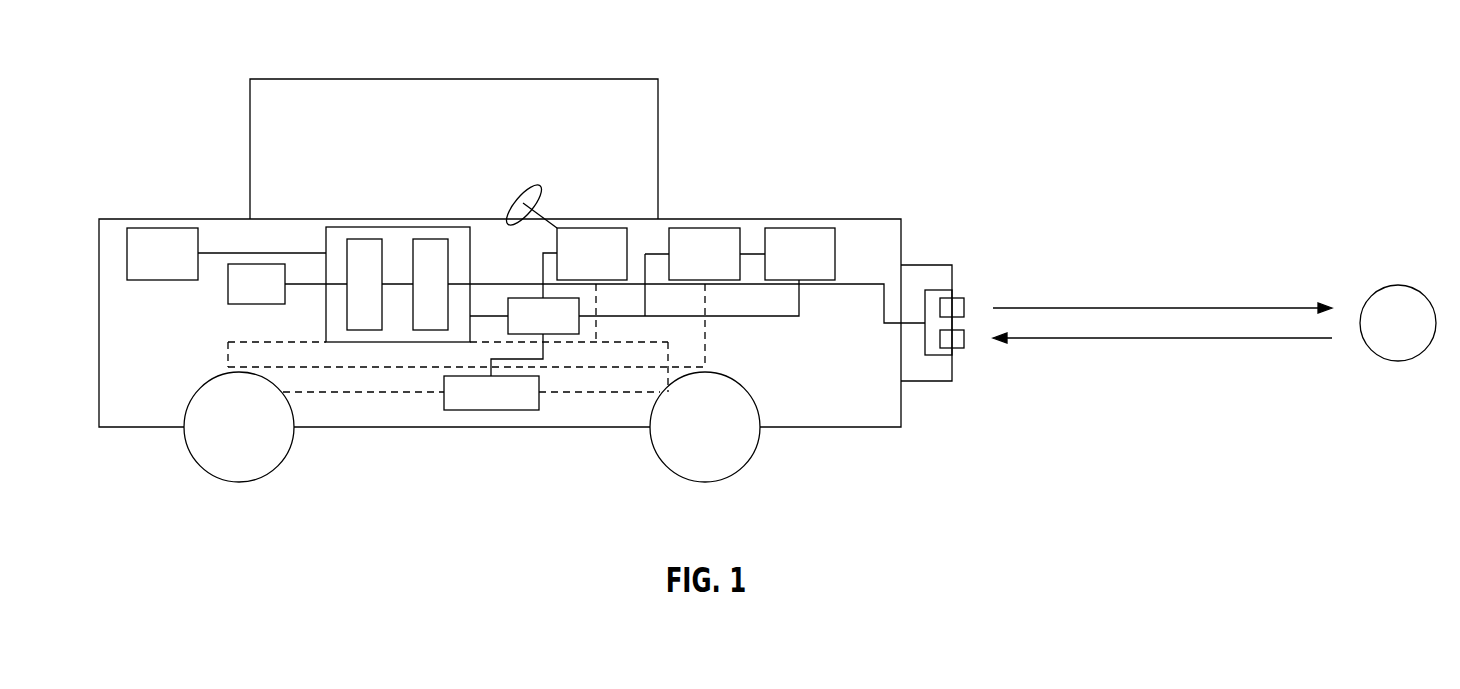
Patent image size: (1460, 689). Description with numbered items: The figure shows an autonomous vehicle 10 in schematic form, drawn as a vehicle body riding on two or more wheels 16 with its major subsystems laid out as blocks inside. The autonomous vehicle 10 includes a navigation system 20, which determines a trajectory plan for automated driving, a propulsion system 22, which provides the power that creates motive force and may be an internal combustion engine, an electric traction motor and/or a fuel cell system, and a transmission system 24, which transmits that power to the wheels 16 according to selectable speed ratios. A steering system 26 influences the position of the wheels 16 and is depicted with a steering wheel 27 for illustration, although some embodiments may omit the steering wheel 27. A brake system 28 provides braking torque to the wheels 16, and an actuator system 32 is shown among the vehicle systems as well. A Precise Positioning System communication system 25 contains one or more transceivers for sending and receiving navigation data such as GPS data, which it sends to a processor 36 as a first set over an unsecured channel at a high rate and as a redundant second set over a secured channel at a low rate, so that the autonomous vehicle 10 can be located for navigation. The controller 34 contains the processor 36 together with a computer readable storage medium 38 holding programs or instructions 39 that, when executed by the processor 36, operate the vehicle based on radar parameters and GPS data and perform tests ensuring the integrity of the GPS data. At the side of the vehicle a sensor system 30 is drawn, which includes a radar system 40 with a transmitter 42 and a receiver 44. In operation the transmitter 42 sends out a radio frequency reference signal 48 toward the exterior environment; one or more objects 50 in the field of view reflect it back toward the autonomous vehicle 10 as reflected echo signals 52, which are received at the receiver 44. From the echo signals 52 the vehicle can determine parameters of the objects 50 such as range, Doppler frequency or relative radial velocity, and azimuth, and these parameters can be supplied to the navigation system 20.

The autonomous vehicle 10 is at (1157, 51).
The wheels 16 is at (240, 482).
The navigation system 20 is at (270, 264).
The propulsion system 22 is at (781, 236).
The transmission system 24 is at (708, 236).
The Precise Positioning System (PPS) communication system 25 is at (160, 228).
The steering system 26 is at (603, 228).
The steering wheel 27 is at (540, 185).
The brake system 28 is at (488, 410).
The sensor system 30 is at (919, 247).
The actuator system 32 is at (556, 330).
The controller 34 is at (398, 227).
The processor 36 is at (372, 239).
The computer readable storage medium 38 is at (430, 239).
The programs or instructions 39 is at (432, 330).
The radar system 40 is at (935, 355).
The transmitter 42 is at (964, 306).
The receiver 44 is at (964, 340).
The radio frequency (RF) reference signal 48 is at (1195, 308).
The object 50 is at (1405, 287).
The reflected echo signal 52 is at (1178, 338).